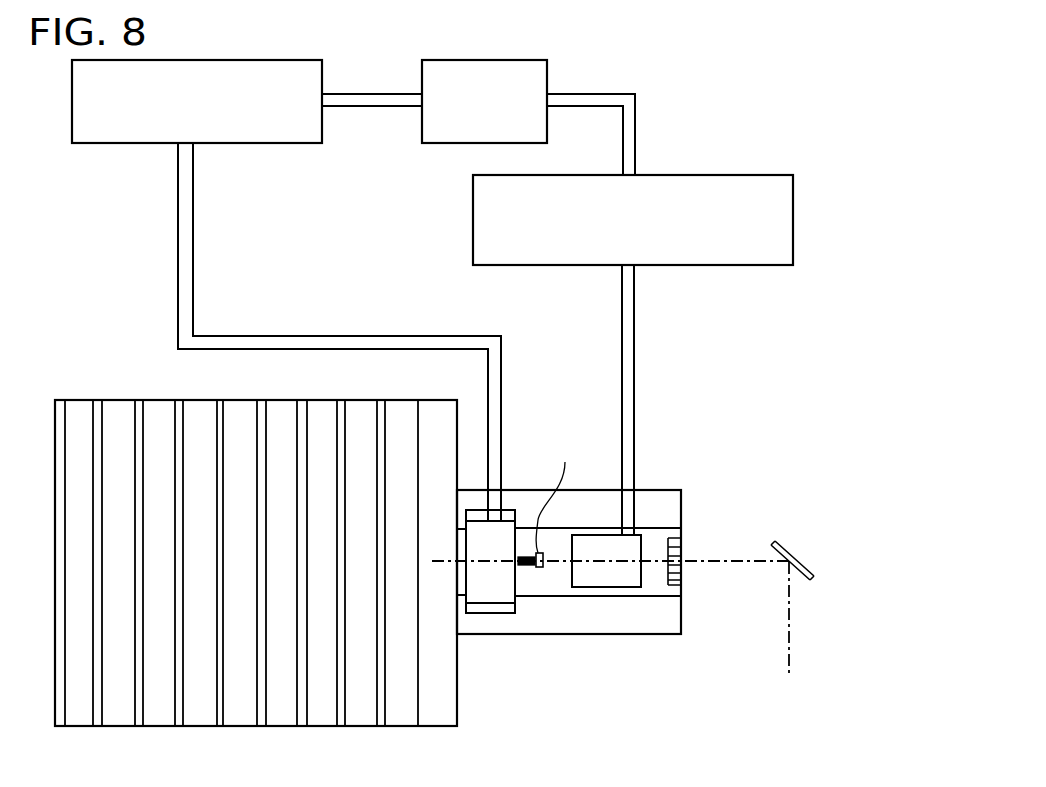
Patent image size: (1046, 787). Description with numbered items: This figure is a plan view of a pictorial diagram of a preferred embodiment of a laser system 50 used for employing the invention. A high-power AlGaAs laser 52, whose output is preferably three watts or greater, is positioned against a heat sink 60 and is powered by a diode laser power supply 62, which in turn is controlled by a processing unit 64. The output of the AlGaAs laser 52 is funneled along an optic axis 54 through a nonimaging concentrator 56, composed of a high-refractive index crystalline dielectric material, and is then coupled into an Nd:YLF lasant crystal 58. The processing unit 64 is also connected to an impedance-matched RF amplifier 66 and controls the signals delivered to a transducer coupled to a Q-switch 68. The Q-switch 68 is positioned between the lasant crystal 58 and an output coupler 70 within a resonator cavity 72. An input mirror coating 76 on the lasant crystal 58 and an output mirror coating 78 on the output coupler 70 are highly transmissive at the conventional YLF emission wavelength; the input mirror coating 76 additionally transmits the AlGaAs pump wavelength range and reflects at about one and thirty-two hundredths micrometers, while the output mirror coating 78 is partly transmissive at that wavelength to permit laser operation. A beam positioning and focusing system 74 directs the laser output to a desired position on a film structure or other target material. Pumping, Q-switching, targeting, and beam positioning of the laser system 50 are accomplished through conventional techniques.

The laser system 50 is at (594, 62).
The AlGaAs laser 52 is at (487, 614).
The optic axis 54 is at (722, 565).
The nonimaging concentrator 56 is at (528, 567).
The lasant crystal 58 is at (543, 568).
The heat sink 60 is at (412, 727).
The diode laser power supply 62 is at (207, 60).
The processing unit 64 is at (462, 60).
The impedance-matched RF amplifier 66 is at (674, 175).
The Q-switch 68 is at (605, 588).
The output coupler 70 is at (681, 560).
The resonator cavity 72 is at (663, 537).
The beam positioning and focusing system 74 is at (794, 557).
The input mirror coating 76 is at (557, 493).
The output mirror coating 78 is at (665, 588).